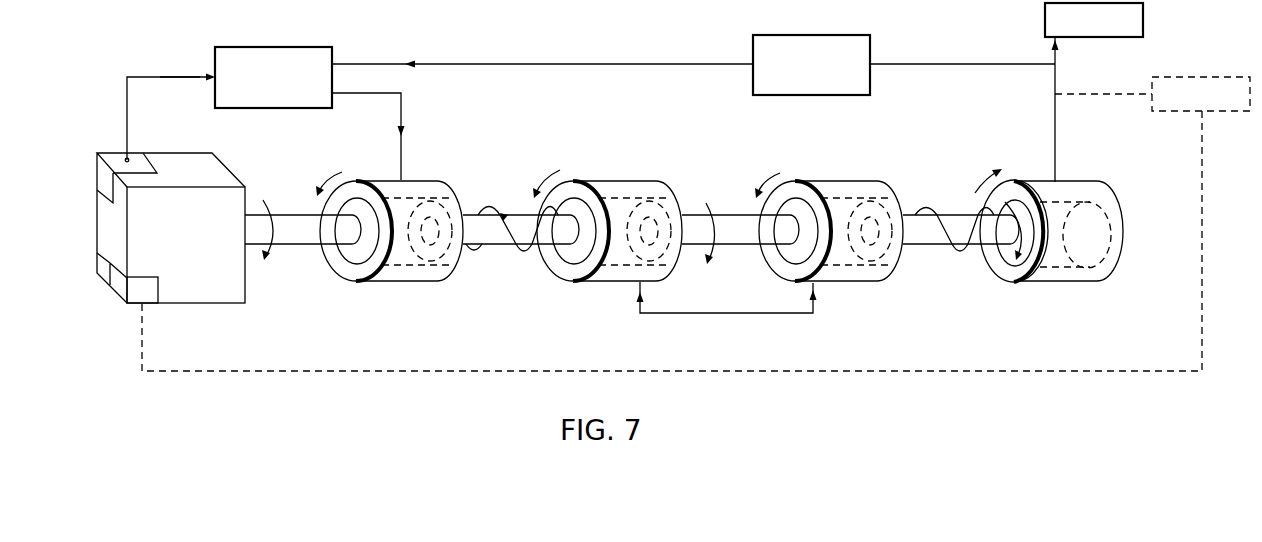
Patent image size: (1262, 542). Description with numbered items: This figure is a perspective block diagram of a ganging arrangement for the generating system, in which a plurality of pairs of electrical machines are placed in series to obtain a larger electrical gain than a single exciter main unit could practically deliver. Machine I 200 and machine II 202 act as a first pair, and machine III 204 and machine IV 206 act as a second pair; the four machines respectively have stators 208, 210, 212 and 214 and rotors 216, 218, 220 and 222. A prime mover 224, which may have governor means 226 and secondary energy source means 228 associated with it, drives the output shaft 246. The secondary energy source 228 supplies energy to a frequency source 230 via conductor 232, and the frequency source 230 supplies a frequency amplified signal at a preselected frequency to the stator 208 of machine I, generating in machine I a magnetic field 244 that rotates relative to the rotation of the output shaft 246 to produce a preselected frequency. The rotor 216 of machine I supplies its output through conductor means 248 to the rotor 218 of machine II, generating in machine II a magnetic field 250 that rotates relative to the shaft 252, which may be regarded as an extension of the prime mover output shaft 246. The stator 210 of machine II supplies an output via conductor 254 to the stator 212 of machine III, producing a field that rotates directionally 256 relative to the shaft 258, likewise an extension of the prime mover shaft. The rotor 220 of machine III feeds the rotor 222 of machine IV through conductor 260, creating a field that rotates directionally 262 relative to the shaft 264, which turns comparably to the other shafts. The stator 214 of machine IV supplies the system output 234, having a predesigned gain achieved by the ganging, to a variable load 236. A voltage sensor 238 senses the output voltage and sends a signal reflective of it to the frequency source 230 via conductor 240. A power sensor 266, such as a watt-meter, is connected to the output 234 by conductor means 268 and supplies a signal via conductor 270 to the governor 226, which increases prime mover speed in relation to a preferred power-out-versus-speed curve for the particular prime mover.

The machine I 200 is at (384, 249).
The machine II 202 is at (589, 245).
The machine III 204 is at (814, 253).
The machine IV 206 is at (1028, 243).
The stator of machine I 208 is at (350, 272).
The stator of machine II 210 is at (558, 268).
The stator of machine III 212 is at (787, 275).
The stator of machine IV 214 is at (1008, 280).
The rotor of machine I 216 is at (358, 258).
The rotor of machine II 218 is at (573, 258).
The rotor of machine III 220 is at (803, 256).
The rotor of machine IV 222 is at (1006, 200).
The prime mover 224 is at (192, 288).
The governor means 226 is at (150, 303).
The secondary energy source means 228 is at (114, 157).
The frequency source 230 is at (307, 47).
The conductor 232 is at (183, 77).
The output 234 is at (1058, 62).
The variable load 236 is at (1145, 18).
The voltage sensor 238 is at (800, 35).
The conductor 240 is at (560, 64).
The magnetic field 244 is at (331, 175).
The output shaft 246 is at (302, 215).
The conductor means 248 is at (520, 256).
The field of second machine 250 is at (547, 175).
The shaft 252 is at (512, 215).
The conductor 254 is at (760, 313).
The direction of magnetic field rotation 256 is at (767, 176).
The shaft 258 is at (730, 215).
The conductor 260 is at (962, 257).
The direction of magnetic field rotation 262 is at (986, 215).
The shaft 264 is at (972, 250).
The power sensor 266 is at (1205, 77).
The conductor means 268 is at (1075, 94).
The conductor 270 is at (1062, 371).